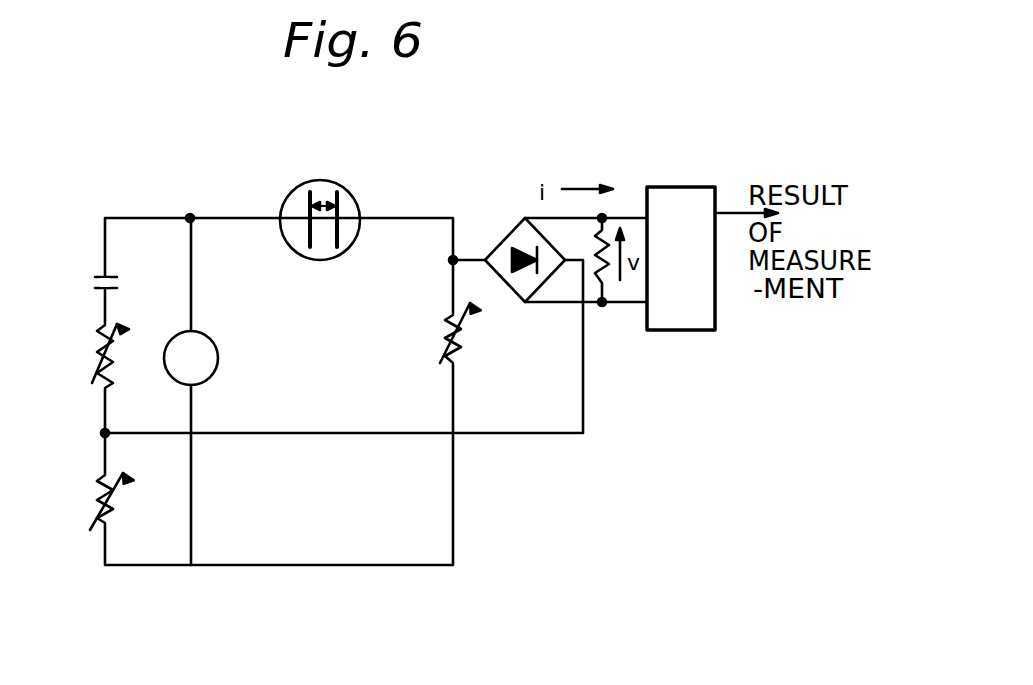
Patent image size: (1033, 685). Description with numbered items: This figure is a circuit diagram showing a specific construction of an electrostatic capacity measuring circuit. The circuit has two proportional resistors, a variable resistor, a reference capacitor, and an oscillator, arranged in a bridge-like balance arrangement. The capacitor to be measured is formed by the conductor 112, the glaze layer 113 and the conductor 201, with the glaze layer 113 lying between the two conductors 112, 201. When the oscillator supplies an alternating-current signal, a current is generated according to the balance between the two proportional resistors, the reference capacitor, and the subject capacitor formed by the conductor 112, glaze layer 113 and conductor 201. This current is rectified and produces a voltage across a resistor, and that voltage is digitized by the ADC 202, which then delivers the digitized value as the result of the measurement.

The conductor 112 is at (306, 196).
The glaze layer 113 is at (327, 202).
The conductor 201 is at (343, 197).
The ADC 202 is at (687, 187).